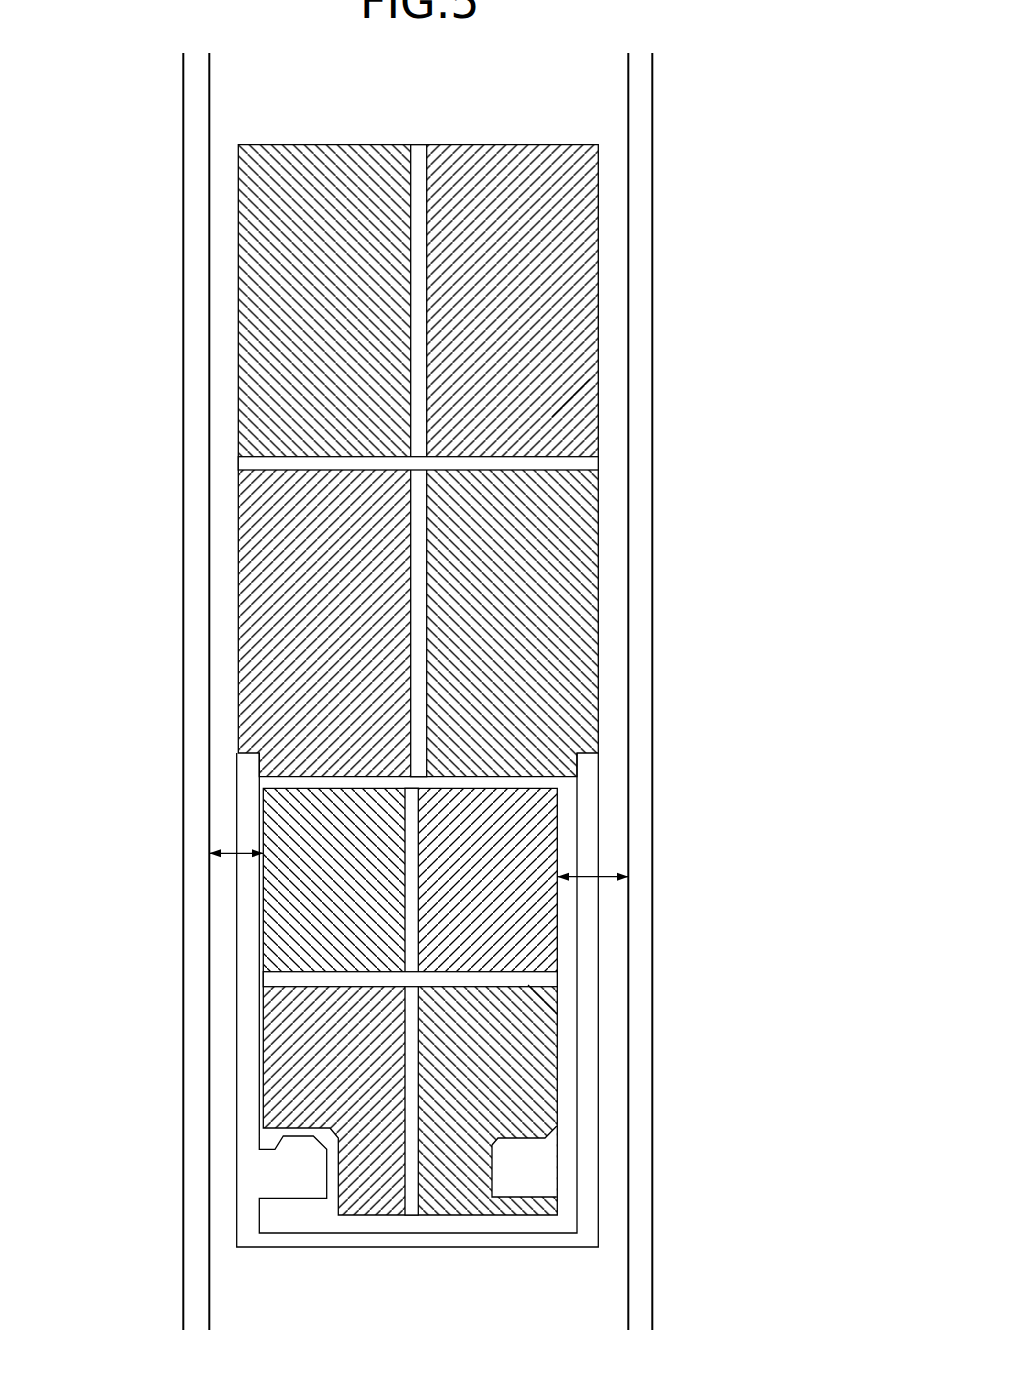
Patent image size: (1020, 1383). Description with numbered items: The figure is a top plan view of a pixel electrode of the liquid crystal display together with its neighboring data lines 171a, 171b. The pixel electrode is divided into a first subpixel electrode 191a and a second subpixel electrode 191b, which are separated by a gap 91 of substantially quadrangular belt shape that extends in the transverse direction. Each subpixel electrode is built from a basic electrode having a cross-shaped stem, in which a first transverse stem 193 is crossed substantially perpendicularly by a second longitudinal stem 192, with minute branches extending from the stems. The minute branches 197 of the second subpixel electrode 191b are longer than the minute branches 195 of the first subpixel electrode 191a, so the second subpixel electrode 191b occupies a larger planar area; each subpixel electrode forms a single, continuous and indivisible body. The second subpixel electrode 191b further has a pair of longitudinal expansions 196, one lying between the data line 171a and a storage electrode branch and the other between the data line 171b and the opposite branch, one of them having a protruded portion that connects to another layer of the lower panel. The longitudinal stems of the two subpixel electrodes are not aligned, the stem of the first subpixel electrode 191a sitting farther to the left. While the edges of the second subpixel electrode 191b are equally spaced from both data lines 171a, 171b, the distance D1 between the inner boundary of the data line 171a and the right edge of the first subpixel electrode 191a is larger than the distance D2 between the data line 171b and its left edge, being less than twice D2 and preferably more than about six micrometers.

The gap 91 is at (484, 680).
The first subpixel electrode 191a is at (557, 811).
The second subpixel electrode 191b is at (580, 522).
The second stem 192 is at (437, 272).
The first stem 193 is at (536, 990).
The minute branches 195 is at (430, 1103).
The longitudinal expansions 196 is at (598, 913).
The minute branches 197 is at (566, 404).
The data line 171a is at (629, 965).
The data line 171b is at (208, 1060).
The distance D1 is at (602, 877).
The distance D2 is at (234, 853).